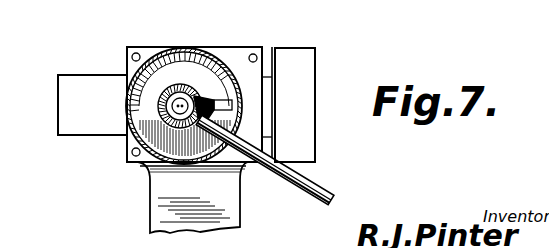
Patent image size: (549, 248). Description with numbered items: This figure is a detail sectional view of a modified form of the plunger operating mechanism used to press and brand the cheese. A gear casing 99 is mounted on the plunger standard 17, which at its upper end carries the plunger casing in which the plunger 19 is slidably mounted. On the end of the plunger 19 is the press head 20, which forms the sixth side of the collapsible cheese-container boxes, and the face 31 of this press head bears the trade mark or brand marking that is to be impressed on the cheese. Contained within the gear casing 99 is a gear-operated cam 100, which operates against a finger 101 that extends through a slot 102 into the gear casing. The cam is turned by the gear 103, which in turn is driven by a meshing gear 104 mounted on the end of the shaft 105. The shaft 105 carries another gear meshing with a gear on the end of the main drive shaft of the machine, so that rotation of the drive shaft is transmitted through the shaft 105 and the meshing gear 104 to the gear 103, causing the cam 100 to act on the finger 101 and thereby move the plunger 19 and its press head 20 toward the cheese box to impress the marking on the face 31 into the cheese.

The plunger standard 17 is at (152, 207).
The plunger 19 is at (83, 128).
The press head 20 is at (300, 72).
The face 31 is at (315, 108).
The gear casing 99 is at (221, 48).
The gear-operated cam 100 is at (137, 96).
The finger 101 is at (184, 106).
The slot 102 is at (218, 100).
The gear 103 is at (170, 113).
The meshing gear 104 is at (192, 123).
The shaft 105 is at (292, 179).